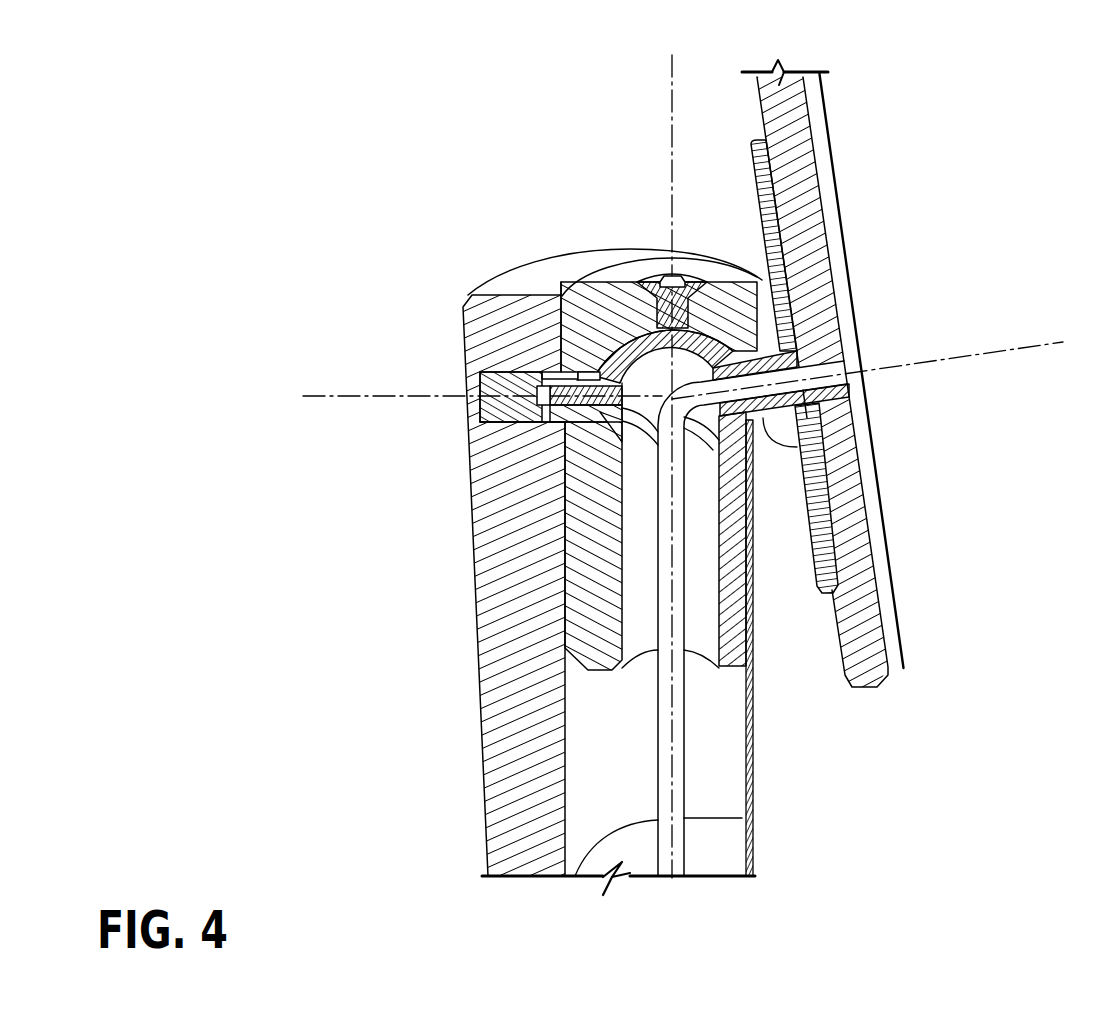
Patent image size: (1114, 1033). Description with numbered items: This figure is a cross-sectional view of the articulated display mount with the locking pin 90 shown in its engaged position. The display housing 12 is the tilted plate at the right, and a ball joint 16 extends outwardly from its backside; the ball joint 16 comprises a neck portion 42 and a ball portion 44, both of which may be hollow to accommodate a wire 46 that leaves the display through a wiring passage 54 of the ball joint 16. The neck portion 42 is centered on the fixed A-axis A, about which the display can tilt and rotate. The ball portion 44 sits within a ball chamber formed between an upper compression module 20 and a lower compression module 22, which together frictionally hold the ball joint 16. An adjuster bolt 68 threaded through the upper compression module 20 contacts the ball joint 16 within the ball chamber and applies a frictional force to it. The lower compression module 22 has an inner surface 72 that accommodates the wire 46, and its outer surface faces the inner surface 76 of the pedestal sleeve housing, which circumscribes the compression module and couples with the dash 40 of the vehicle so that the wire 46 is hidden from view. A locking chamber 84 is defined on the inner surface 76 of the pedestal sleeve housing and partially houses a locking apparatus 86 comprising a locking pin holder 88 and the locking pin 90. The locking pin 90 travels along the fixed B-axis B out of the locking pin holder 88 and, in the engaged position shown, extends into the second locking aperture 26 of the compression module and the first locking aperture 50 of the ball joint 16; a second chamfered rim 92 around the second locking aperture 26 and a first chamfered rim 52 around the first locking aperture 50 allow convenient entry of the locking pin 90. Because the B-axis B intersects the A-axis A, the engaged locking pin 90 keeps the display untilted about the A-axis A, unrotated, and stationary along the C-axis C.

The display housing 12 is at (793, 125).
The ball joint 16 is at (728, 335).
The upper compression module 20 is at (620, 290).
The lower compression module 22 is at (583, 603).
The second locking aperture 26 is at (572, 418).
The dash 40 is at (756, 746).
The neck portion 42 is at (772, 420).
The ball portion 44 is at (602, 333).
The wire 46 is at (684, 788).
The first locking aperture 50 is at (603, 413).
The first chamfered rim 52 is at (604, 368).
The wiring passage 54 is at (690, 440).
The adjuster bolt 68 is at (652, 282).
The inner surface 72 is at (699, 550).
The inner surface 76 is at (594, 722).
The locking chamber 84 is at (469, 438).
The locking apparatus 86 is at (517, 428).
The locking pin holder 88 is at (486, 385).
The locking pin 90 is at (577, 384).
The second chamfered rim 92 is at (585, 376).
The A-axis A is at (881, 362).
The B-axis B is at (474, 393).
The C-axis C is at (673, 453).